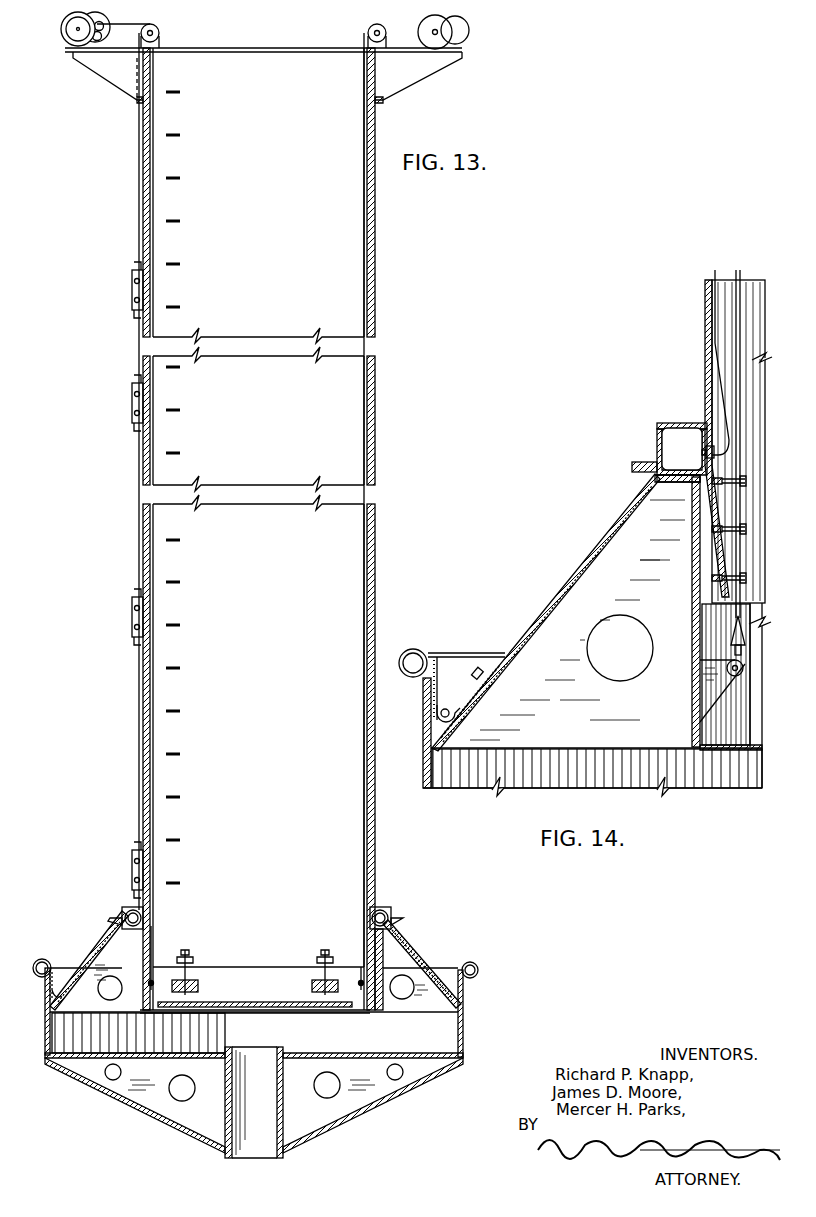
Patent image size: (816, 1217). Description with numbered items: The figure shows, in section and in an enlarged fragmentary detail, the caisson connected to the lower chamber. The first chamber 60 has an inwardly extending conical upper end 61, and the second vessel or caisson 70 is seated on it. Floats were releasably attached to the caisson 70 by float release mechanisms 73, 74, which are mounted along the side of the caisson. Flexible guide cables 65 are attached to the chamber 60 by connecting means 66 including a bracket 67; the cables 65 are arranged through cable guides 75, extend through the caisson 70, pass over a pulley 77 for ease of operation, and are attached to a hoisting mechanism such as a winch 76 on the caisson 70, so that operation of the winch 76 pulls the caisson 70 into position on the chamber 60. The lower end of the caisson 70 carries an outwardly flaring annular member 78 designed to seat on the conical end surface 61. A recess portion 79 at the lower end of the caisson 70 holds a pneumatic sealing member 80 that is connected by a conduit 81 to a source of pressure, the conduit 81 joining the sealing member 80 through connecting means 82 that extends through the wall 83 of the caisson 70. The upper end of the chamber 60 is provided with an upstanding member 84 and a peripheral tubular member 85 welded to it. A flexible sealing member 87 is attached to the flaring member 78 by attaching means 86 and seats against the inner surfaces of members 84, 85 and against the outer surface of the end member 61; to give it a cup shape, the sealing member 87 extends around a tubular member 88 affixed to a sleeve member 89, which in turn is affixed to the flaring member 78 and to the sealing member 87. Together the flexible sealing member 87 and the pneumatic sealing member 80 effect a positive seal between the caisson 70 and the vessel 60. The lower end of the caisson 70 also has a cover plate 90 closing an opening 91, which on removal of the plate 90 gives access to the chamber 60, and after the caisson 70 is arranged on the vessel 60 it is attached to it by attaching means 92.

In FIG. 13, the first chamber 60 is at (446, 1033).
In FIG. 14, the first chamber 60 is at (585, 782).
In FIG. 13, the conical upper end 61 is at (414, 953).
In FIG. 14, the conical upper end 61 is at (589, 577).
In FIG. 13, the flexible guide cables 65 is at (123, 46).
In FIG. 14, the flexible guide cables 65 is at (742, 450).
In FIG. 14, the connecting means 66 is at (742, 639).
In FIG. 14, the bracket 67 is at (715, 706).
In FIG. 13, the caisson 70 is at (378, 408).
In FIG. 14, the caisson 70 is at (696, 353).
In FIG. 13, the float release mechanism 73 is at (131, 292).
In FIG. 13, the float release mechanism 74 is at (131, 617).
In FIG. 14, the cable guides 75 is at (748, 479).
In FIG. 13, the winch 76 is at (70, 26).
In FIG. 13, the pulley 77 is at (158, 33).
In FIG. 13, the outwardly flaring annular member 78 is at (96, 955).
In FIG. 14, the outwardly flaring annular member 78 is at (597, 547).
In FIG. 14, the recess portion 79 is at (655, 427).
In FIG. 14, the pneumatic sealing member 80 is at (655, 449).
In FIG. 14, the conduit 81 is at (722, 400).
In FIG. 14, the connecting means 82 is at (714, 452).
In FIG. 14, the wall 83 is at (705, 315).
In FIG. 13, the upstanding member 84 is at (45, 1029).
In FIG. 14, the upstanding member 84 is at (426, 749).
In FIG. 13, the peripheral tubular member 85 is at (41, 960).
In FIG. 14, the peripheral tubular member 85 is at (414, 648).
In FIG. 14, the attaching means 86 is at (478, 672).
In FIG. 13, the flexible sealing member 87 is at (46, 980).
In FIG. 14, the flexible sealing member 87 is at (426, 697).
In FIG. 14, the tubular member 88 is at (426, 717).
In FIG. 14, the sleeve member 89 is at (497, 655).
In FIG. 13, the cover plate 90 is at (246, 1002).
In FIG. 13, the opening 91 is at (258, 1011).
In FIG. 13, the attaching means 92 is at (191, 977).